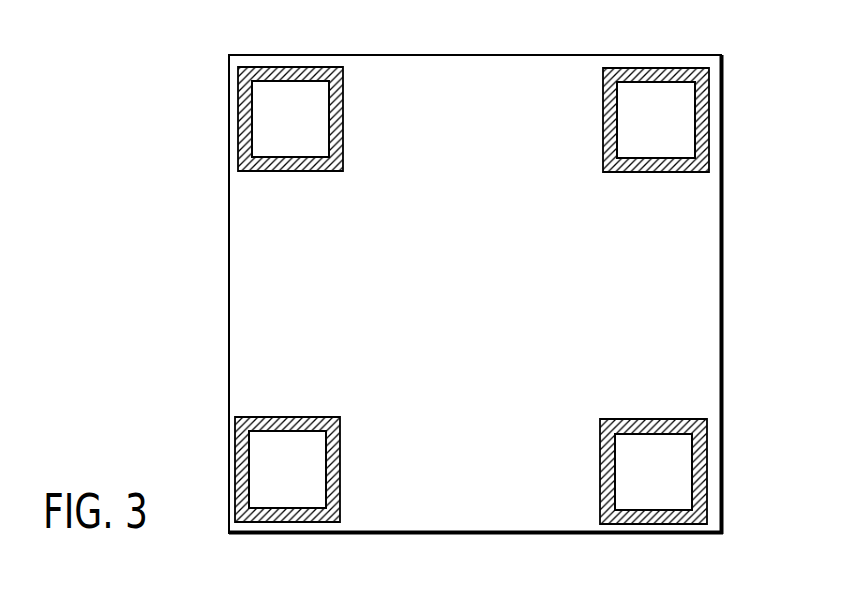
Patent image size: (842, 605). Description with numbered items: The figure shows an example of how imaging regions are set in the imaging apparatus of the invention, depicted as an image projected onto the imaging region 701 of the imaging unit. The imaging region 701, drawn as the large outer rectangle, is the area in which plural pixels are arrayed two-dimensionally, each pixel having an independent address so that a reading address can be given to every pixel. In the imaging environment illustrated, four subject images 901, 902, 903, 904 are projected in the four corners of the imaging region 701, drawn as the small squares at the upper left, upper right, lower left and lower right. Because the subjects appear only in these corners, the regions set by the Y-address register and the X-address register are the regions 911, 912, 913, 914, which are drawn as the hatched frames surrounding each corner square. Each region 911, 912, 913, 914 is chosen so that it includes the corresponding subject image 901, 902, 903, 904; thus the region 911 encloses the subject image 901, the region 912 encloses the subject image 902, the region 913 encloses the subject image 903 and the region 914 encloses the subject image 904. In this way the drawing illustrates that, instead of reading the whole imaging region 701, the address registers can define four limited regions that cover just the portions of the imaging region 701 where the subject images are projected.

The imaging region 701 is at (470, 55).
The subject image 901 is at (288, 93).
The subject image 902 is at (655, 95).
The subject image 903 is at (286, 497).
The subject image 904 is at (653, 500).
The region 911 is at (238, 113).
The region 912 is at (710, 120).
The region 913 is at (235, 472).
The region 914 is at (707, 480).